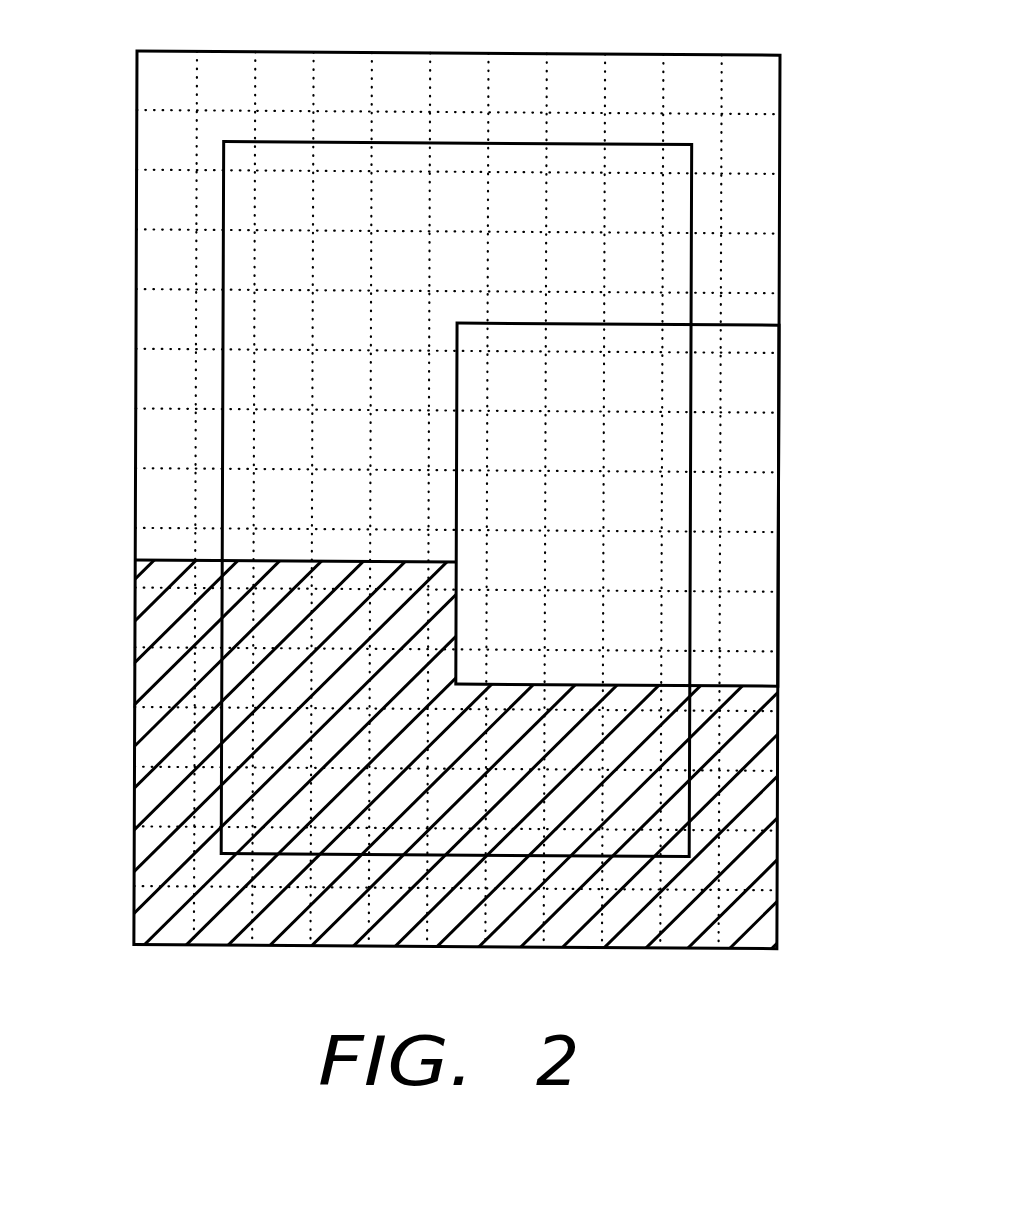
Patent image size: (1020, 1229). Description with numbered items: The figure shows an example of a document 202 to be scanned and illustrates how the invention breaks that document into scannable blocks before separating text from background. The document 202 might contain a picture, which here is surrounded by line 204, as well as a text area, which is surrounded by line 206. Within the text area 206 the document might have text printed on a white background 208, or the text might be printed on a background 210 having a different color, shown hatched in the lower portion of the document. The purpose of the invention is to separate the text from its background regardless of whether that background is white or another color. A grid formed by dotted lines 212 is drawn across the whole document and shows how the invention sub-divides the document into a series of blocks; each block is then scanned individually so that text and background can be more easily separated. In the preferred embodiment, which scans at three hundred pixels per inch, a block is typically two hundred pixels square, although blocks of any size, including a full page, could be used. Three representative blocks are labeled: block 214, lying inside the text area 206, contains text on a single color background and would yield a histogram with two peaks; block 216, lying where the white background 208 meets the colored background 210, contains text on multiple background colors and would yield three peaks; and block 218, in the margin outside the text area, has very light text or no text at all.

The document 202 is at (457, 500).
The line surrounding picture 204 is at (617, 504).
The line surrounding text area 206 is at (456, 499).
The white background 208 is at (179, 306).
The background having a different color 210 is at (510, 752).
The dotted lines 212 is at (457, 500).
The block 214 is at (273, 321).
The block 216 is at (295, 561).
The block 218 is at (179, 320).